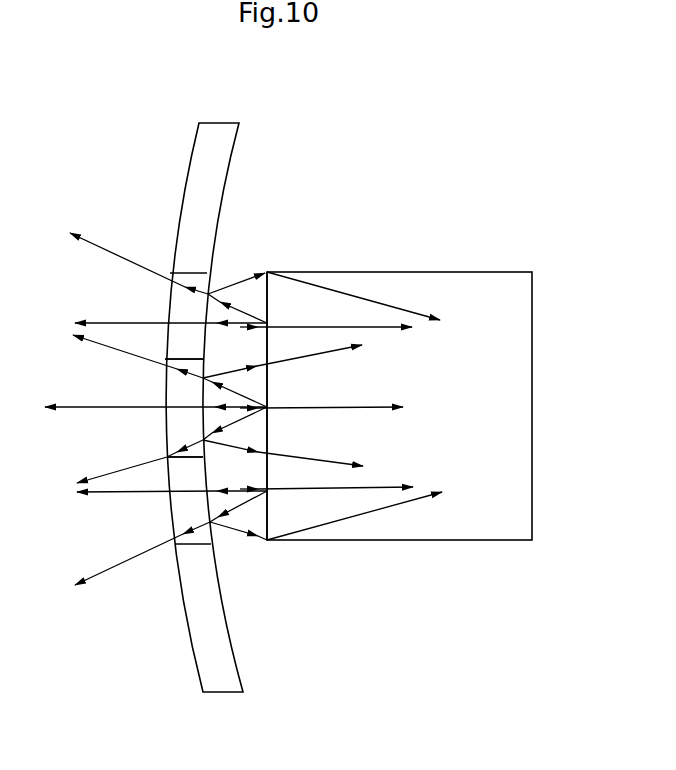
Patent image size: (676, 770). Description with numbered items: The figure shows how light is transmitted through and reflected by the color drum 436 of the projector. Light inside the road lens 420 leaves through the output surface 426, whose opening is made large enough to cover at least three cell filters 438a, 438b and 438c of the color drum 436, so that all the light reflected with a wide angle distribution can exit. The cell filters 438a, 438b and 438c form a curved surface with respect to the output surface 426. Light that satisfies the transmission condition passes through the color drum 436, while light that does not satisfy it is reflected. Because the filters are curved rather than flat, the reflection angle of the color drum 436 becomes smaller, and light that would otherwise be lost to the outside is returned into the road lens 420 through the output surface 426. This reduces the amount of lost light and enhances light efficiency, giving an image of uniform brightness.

The road lens 420 is at (484, 259).
The output surface 426 is at (267, 521).
The color drum 436 is at (178, 618).
The cell filter 438a is at (173, 306).
The cell filter 438b is at (173, 402).
The cell filter 438c is at (178, 505).